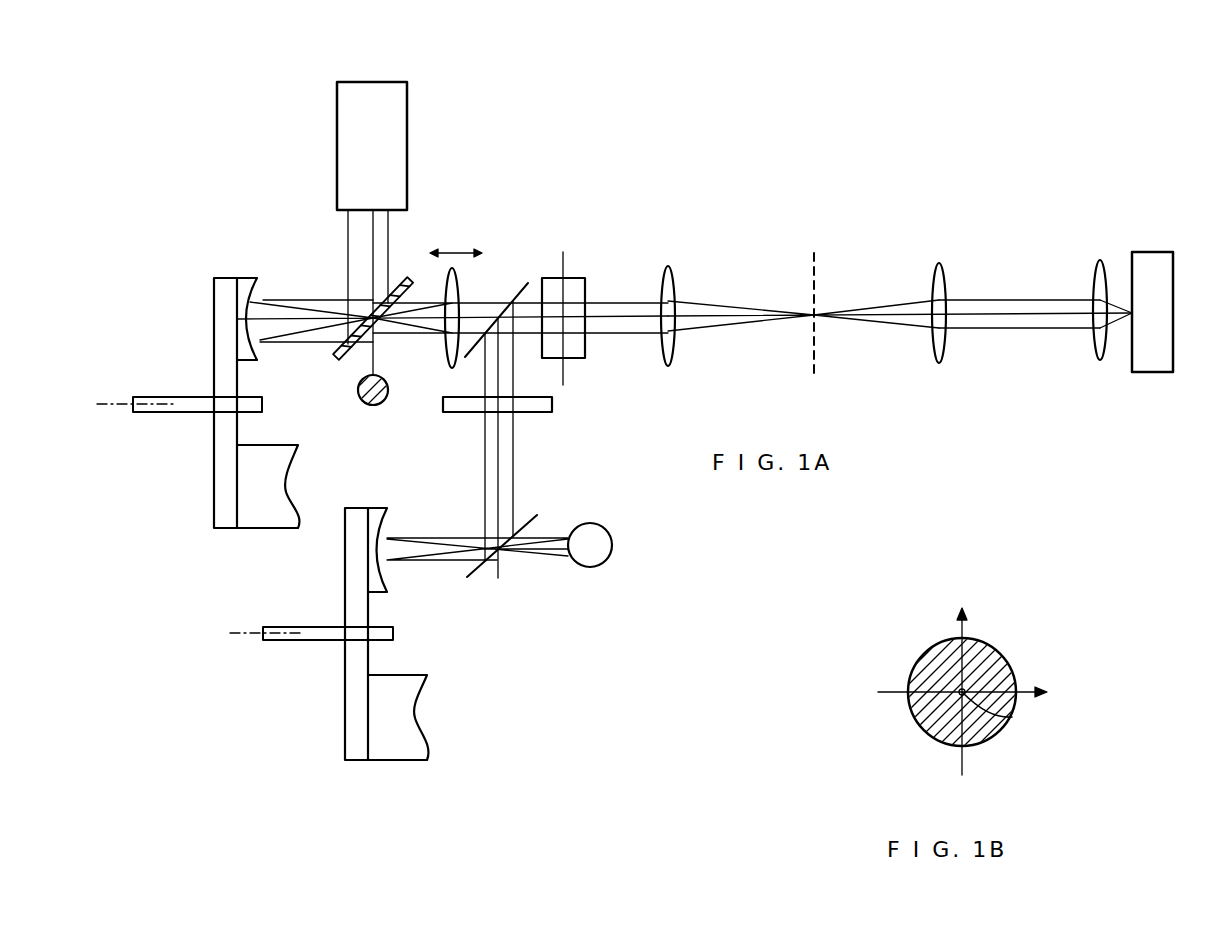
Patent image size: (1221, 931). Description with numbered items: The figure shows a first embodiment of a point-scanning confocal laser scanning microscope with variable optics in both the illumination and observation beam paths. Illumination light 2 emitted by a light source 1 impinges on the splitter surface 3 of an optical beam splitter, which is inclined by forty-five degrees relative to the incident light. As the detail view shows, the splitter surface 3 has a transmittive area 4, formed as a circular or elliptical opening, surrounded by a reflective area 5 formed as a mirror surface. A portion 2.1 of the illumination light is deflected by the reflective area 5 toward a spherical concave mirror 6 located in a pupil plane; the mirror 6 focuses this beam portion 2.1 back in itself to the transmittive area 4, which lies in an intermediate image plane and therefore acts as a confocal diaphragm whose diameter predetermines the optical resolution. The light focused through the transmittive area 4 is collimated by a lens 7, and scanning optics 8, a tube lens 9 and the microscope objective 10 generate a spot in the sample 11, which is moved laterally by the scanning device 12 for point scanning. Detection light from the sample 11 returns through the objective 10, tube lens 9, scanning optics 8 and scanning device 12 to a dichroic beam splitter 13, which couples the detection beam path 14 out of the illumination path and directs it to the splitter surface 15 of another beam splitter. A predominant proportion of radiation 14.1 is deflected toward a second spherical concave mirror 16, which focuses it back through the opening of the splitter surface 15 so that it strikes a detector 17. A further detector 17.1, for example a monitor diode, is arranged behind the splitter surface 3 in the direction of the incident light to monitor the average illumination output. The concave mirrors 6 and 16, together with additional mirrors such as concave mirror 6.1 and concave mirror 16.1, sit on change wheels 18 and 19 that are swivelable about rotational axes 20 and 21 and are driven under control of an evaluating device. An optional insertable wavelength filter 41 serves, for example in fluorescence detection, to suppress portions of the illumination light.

In FIG. 1A, the light source 1 is at (337, 165).
In FIG. 1A, the illumination light 2 is at (383, 240).
In FIG. 1A, the portion of the illumination light 2.1 is at (318, 298).
In FIG. 1A, the splitter surface 3 is at (336, 358).
In FIG. 1B, the splitter surface 3 is at (908, 730).
In FIG. 1B, the transmittive area 4 is at (1012, 715).
In FIG. 1B, the reflective area 5 is at (933, 662).
In FIG. 1A, the spherical concave mirror 6 is at (247, 276).
In FIG. 1A, the concave mirror 6.1 is at (260, 530).
In FIG. 1A, the lens 7 is at (452, 368).
In FIG. 1A, the scanning optics 8 is at (674, 270).
In FIG. 1A, the tube lens 9 is at (944, 263).
In FIG. 1A, the microscope objective 10 is at (1094, 262).
In FIG. 1A, the sample 11 is at (1148, 252).
In FIG. 1A, the scanning device 12 is at (587, 285).
In FIG. 1A, the dichroic beam splitter 13 is at (518, 288).
In FIG. 1A, the detection beam path 14 is at (513, 497).
In FIG. 1A, the proportion of radiation 14.1 is at (438, 538).
In FIG. 1A, the splitter surface 15 is at (473, 577).
In FIG. 1A, the spherical concave mirror 16 is at (380, 507).
In FIG. 1A, the concave mirror 16.1 is at (417, 712).
In FIG. 1A, the detector 17 is at (590, 567).
In FIG. 1A, the detector 17.1 is at (358, 395).
In FIG. 1A, the change wheel 18 is at (213, 437).
In FIG. 1A, the change wheel 19 is at (343, 660).
In FIG. 1A, the rotational axis 20 is at (100, 404).
In FIG. 1A, the rotational axis 21 is at (232, 635).
In FIG. 1A, the wavelength filter 41 is at (552, 412).